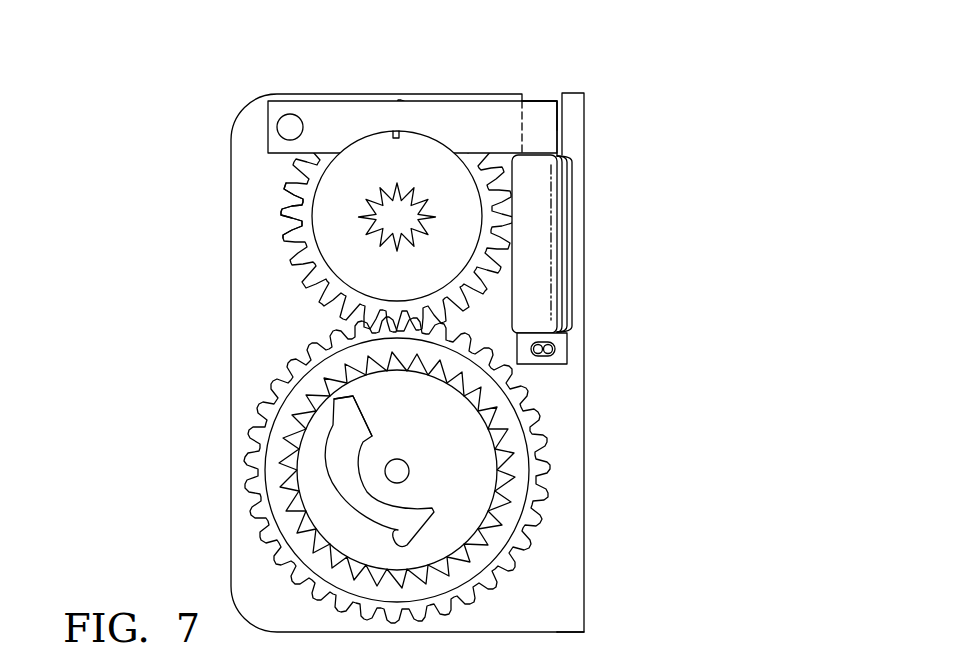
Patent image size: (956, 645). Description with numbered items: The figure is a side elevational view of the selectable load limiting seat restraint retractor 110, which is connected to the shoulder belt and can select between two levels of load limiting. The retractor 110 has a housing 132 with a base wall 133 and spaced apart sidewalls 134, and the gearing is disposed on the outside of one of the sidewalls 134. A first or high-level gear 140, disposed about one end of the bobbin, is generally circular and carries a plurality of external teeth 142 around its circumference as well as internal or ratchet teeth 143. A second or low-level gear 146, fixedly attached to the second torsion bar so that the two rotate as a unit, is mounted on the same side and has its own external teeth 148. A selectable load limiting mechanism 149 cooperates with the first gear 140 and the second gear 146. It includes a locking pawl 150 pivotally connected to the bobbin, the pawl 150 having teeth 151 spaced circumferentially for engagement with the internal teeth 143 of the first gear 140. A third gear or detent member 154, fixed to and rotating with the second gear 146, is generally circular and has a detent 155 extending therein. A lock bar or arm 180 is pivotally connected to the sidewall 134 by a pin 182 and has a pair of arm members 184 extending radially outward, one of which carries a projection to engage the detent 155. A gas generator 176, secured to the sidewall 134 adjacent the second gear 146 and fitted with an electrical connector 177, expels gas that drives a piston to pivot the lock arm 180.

The selectable load limiting seat restraint retractor 110 is at (428, 320).
The housing 132 is at (238, 108).
The base wall 133 is at (585, 528).
The sidewalls 134 is at (567, 578).
The first gear 140 is at (474, 470).
The external teeth 142 is at (545, 452).
The internal teeth 143 is at (303, 513).
The second gear 146 is at (293, 237).
The external teeth 148 is at (285, 208).
The selectable load limiting mechanism 149 is at (549, 92).
The locking pawl 150 is at (365, 503).
The teeth 151 is at (333, 418).
The detent member 154 is at (382, 152).
The detent 155 is at (400, 135).
The gas generator 176 is at (558, 242).
The electrical connector 177 is at (563, 350).
The lock arm 180 is at (330, 101).
The pin 182 is at (290, 113).
The arm members 184 is at (483, 108).